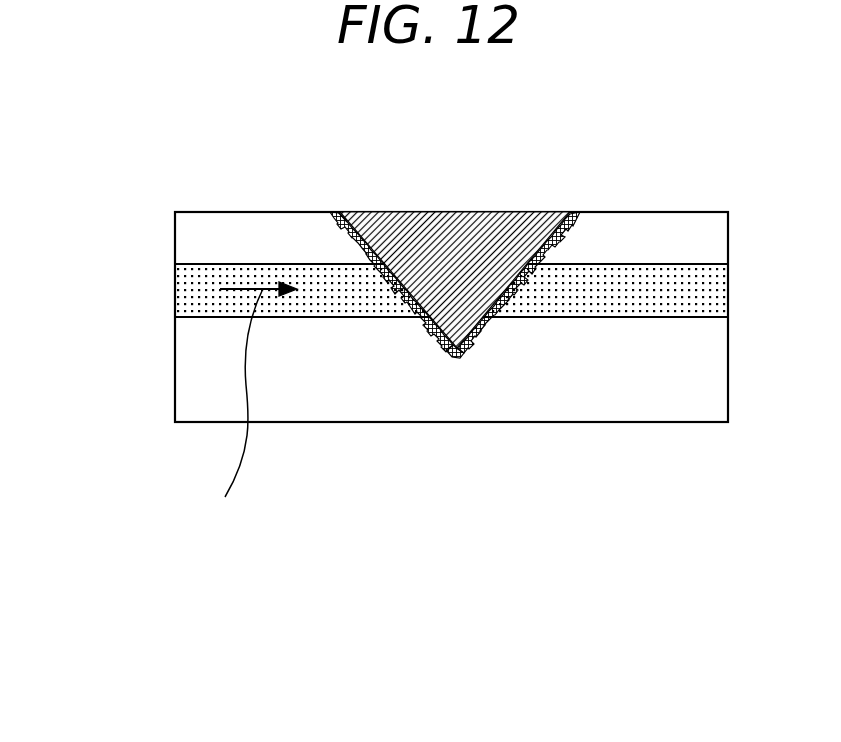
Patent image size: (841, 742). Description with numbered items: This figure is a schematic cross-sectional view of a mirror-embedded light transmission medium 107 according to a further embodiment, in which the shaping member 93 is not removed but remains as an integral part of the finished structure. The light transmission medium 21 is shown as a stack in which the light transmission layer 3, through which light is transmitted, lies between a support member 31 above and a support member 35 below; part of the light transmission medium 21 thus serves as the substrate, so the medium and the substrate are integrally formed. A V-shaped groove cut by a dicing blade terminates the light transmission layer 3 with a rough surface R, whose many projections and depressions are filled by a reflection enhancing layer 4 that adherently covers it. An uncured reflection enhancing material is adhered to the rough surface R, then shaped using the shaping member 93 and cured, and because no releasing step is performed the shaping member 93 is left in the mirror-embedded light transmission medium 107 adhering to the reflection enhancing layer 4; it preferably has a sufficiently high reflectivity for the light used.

The mirror-embedded light transmission medium 107 is at (155, 160).
The light transmission medium 21 is at (103, 210).
The support member 31 is at (183, 233).
The light transmission layer 3 is at (181, 288).
The support member 35 is at (183, 364).
The shaping member 93 is at (474, 212).
The reflection enhancing layer 4 is at (416, 313).
The rough surface R is at (343, 245).